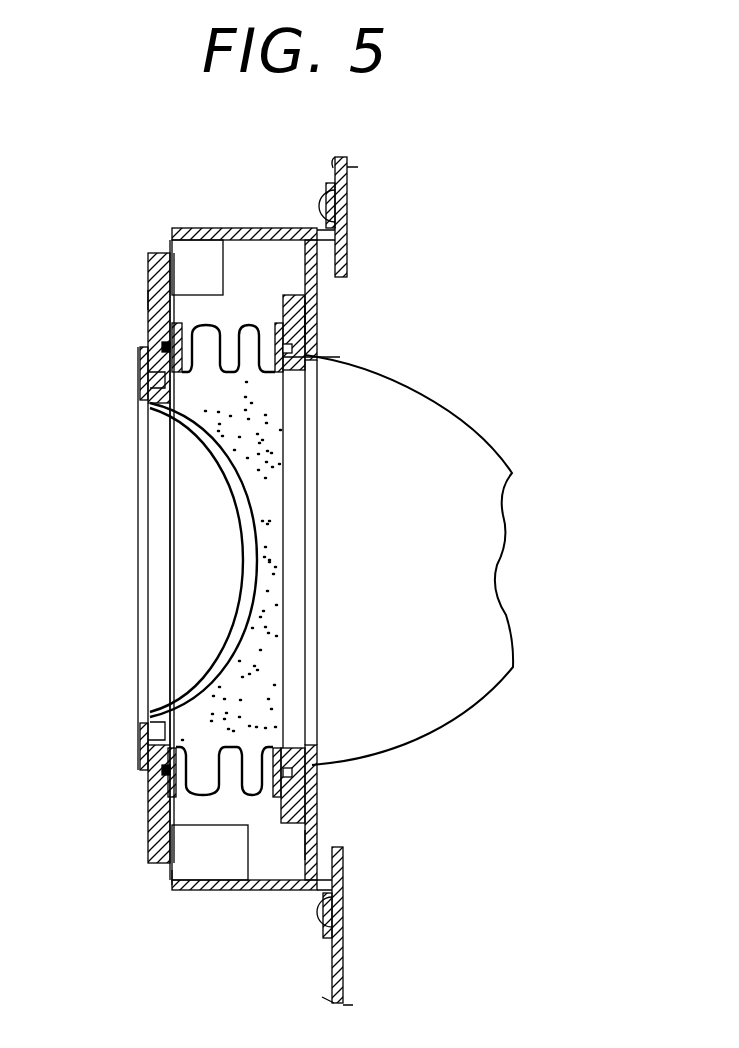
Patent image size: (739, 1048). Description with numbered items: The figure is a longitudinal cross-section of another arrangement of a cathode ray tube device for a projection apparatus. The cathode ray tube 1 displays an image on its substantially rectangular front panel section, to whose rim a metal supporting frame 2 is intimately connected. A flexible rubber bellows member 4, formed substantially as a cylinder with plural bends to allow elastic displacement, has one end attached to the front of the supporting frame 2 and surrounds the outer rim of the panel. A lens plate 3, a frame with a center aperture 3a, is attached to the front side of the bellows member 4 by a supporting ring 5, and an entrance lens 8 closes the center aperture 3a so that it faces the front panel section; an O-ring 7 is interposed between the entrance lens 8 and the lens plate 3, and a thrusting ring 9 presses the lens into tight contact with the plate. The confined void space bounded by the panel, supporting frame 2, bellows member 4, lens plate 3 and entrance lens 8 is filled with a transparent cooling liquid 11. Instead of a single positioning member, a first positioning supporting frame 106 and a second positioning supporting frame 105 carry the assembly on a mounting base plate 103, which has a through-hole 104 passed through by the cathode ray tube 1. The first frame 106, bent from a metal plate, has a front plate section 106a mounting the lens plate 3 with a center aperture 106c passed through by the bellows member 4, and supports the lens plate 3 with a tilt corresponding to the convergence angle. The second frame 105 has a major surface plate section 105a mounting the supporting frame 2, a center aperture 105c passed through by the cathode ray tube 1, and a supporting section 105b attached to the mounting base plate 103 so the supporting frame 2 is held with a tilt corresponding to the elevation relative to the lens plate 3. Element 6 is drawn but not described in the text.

The cathode ray tube 1 is at (447, 428).
The supporting frame 2 is at (300, 765).
The lens plate 3 is at (155, 830).
The center aperture 3a is at (163, 717).
The bellows member 4 is at (231, 742).
The supporting ring 5 is at (173, 790).
The ring member 6 is at (283, 745).
The O-ring 7 is at (143, 377).
The entrance lens 8 is at (195, 430).
The thrusting ring 9 is at (142, 740).
The cooling liquid 11 is at (270, 643).
The mounting base plate 103 is at (330, 962).
The through-hole 104 is at (345, 277).
The second positioning supporting frame 105 is at (305, 258).
The major surface plate section 105a is at (315, 843).
The supporting section 105b is at (347, 212).
The center aperture 105c is at (310, 355).
The first positioning supporting frame 106 is at (200, 228).
The front plate section 106a is at (163, 875).
The center aperture 106c is at (177, 295).